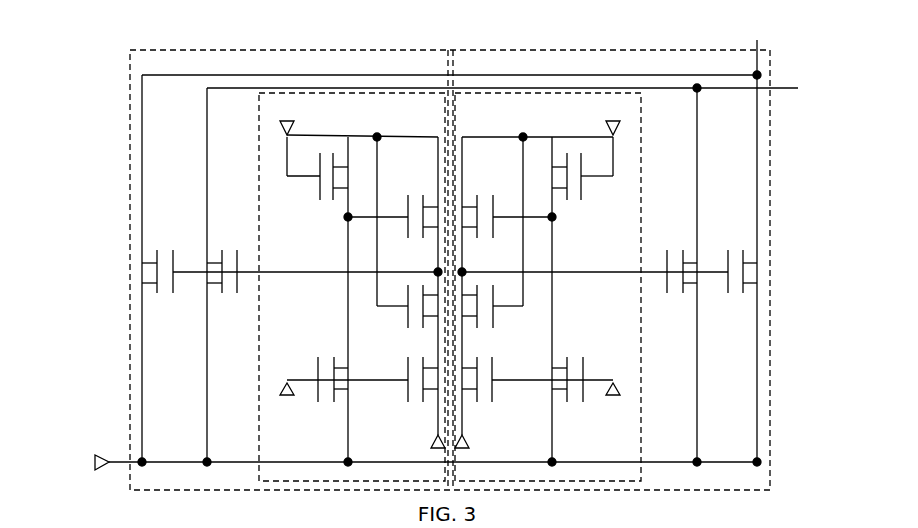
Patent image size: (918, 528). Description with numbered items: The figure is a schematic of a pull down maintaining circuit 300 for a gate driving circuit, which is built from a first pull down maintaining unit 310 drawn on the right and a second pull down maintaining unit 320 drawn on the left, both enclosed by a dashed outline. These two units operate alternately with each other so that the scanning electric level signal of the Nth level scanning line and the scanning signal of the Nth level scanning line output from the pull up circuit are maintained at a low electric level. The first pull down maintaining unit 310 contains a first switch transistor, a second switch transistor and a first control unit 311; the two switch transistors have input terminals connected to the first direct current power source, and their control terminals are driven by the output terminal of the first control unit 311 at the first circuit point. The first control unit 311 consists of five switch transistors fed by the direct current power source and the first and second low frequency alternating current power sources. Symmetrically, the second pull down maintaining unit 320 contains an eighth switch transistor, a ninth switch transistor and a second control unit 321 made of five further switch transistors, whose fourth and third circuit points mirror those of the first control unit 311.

The pull down maintaining circuit 300 is at (113, 63).
The first pull down maintaining unit 310 is at (774, 212).
The first control unit 311 is at (557, 92).
The second pull down maintaining unit 320 is at (127, 196).
The second control unit 321 is at (356, 92).